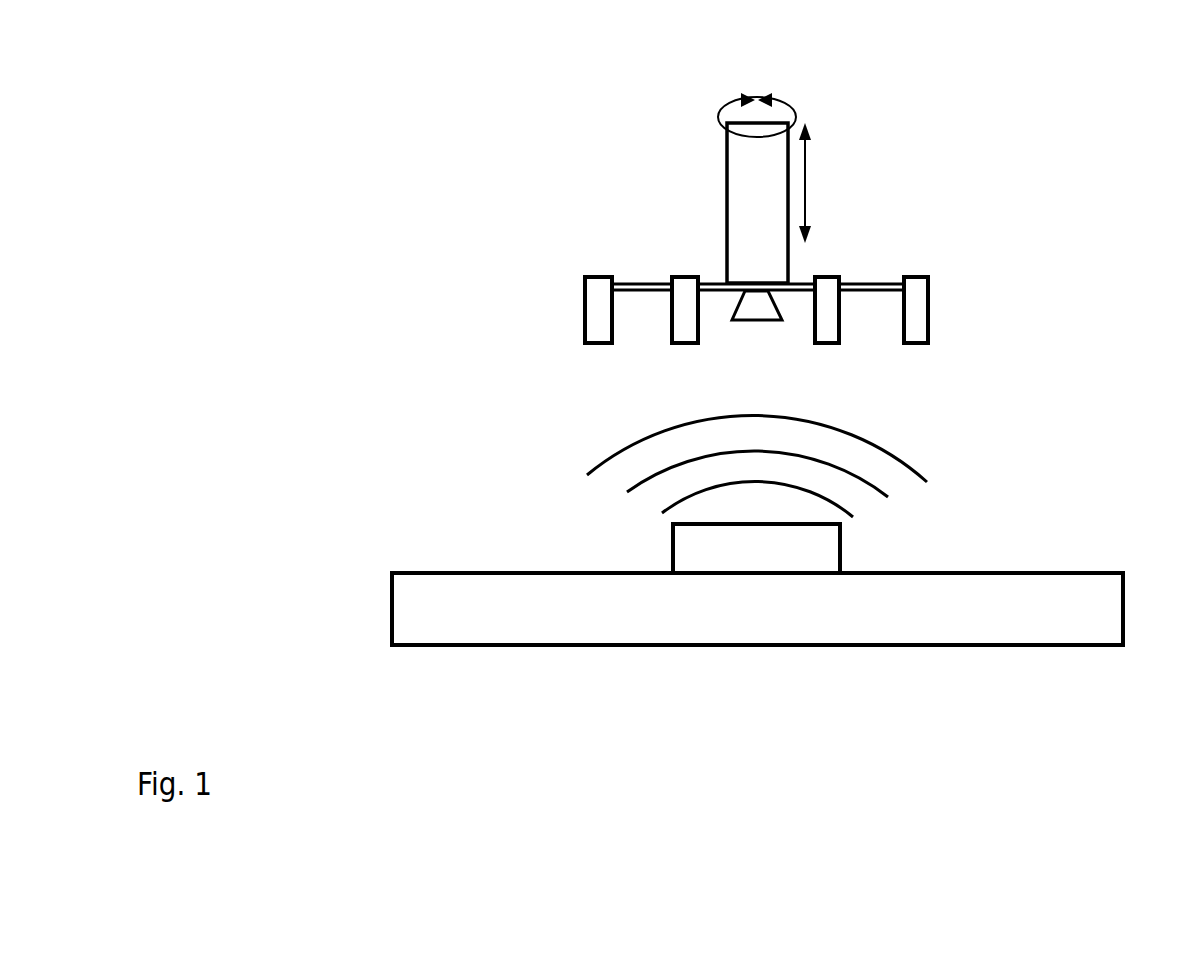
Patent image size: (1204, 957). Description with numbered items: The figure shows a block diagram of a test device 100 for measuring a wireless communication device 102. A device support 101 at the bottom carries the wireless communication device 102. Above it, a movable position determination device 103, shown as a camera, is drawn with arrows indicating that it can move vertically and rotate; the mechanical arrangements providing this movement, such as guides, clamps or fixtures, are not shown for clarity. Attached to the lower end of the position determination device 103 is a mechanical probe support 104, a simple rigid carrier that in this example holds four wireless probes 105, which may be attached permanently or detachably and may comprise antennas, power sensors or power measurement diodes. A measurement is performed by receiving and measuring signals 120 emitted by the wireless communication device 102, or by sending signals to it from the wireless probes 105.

The test device 100 is at (348, 137).
The device support 101 is at (1068, 583).
The wireless communication device 102 is at (840, 540).
The position determination device 103 is at (727, 177).
The mechanical probe support 104 is at (873, 281).
The wireless probes 105 is at (906, 338).
The signals 120 is at (925, 468).